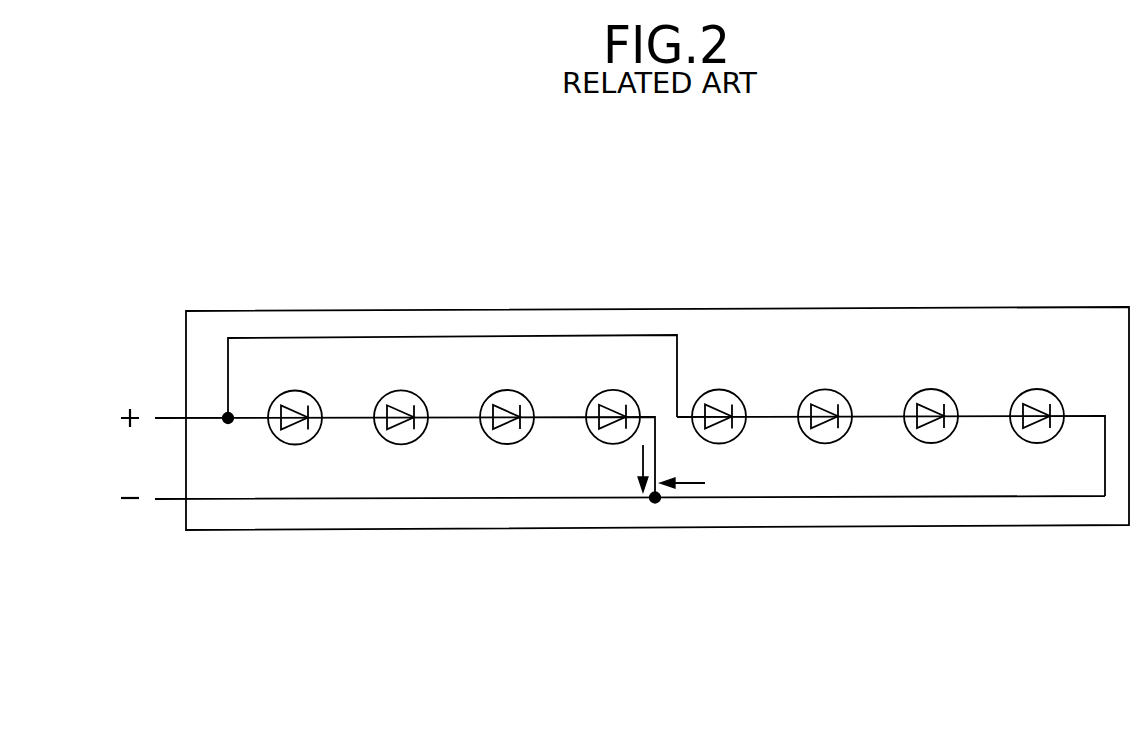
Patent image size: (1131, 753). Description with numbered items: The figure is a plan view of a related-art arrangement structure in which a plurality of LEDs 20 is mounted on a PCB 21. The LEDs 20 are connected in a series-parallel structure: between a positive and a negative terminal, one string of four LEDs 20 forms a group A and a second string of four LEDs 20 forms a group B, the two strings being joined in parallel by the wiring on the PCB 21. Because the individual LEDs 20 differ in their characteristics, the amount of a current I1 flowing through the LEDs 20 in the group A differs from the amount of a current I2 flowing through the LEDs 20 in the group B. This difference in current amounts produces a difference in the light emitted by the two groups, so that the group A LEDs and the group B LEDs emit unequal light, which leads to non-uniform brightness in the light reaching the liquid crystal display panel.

The LEDs 20 is at (294, 390).
The PCB 21 is at (445, 310).
The group A is at (646, 538).
The group B is at (1073, 535).
The current I1 is at (632, 468).
The current I2 is at (695, 484).